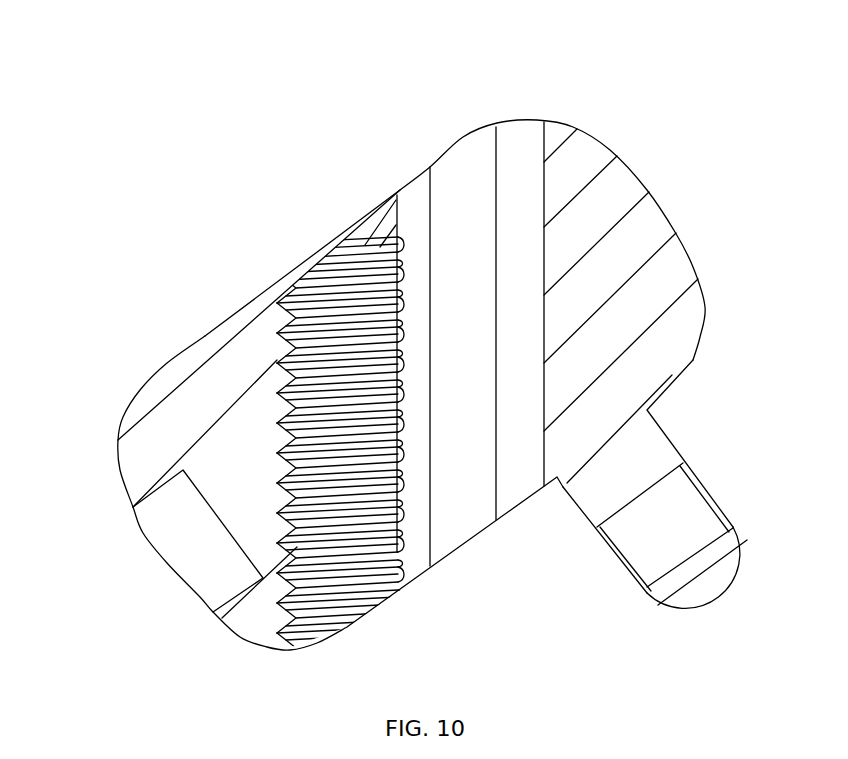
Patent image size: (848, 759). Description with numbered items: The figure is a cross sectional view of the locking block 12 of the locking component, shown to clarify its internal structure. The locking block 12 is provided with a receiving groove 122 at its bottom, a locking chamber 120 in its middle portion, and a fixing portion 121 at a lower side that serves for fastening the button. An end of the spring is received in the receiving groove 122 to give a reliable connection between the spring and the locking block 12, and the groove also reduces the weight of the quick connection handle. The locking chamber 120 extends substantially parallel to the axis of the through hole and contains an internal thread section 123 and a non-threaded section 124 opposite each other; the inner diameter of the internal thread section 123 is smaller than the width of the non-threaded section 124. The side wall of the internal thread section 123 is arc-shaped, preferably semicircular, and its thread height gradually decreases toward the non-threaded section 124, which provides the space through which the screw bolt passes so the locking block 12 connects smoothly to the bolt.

The locking block 12 is at (610, 195).
The locking chamber 120 is at (405, 190).
The fixing portion 121 is at (658, 440).
The receiving groove 122 is at (173, 518).
The internal thread section 123 is at (318, 277).
The non-threaded section 124 is at (510, 146).